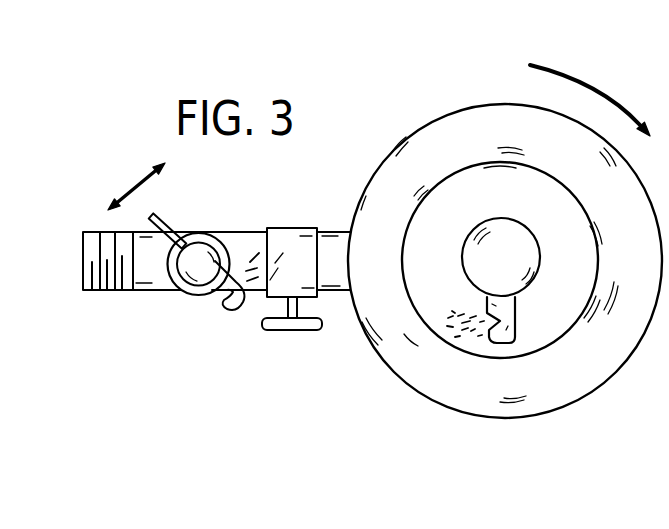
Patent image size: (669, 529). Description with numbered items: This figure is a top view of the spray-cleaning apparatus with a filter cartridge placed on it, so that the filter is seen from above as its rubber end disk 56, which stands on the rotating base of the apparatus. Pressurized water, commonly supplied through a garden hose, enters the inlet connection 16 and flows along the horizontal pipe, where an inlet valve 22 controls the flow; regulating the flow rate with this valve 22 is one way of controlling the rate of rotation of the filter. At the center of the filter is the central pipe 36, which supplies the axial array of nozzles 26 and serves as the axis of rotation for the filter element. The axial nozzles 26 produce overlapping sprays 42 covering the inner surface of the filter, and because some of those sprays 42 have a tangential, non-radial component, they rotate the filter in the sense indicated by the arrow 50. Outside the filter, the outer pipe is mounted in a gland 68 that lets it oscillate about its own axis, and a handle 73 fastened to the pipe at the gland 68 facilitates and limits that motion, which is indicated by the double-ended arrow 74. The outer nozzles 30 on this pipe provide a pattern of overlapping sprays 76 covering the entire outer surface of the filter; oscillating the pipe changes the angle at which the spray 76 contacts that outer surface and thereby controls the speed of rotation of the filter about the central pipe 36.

The inlet connection 16 is at (83, 282).
The inlet valve 22 is at (288, 258).
The axial nozzle 26 is at (517, 318).
The outer nozzle 30 is at (218, 308).
The central pipe 36 is at (522, 228).
The spray 42 is at (458, 312).
The arrow 50 is at (578, 75).
The rubber end disk 56 is at (555, 392).
The gland 68 is at (192, 294).
The handle 73 is at (157, 218).
The double-ended arrow 74 is at (127, 183).
The spray 76 is at (253, 263).